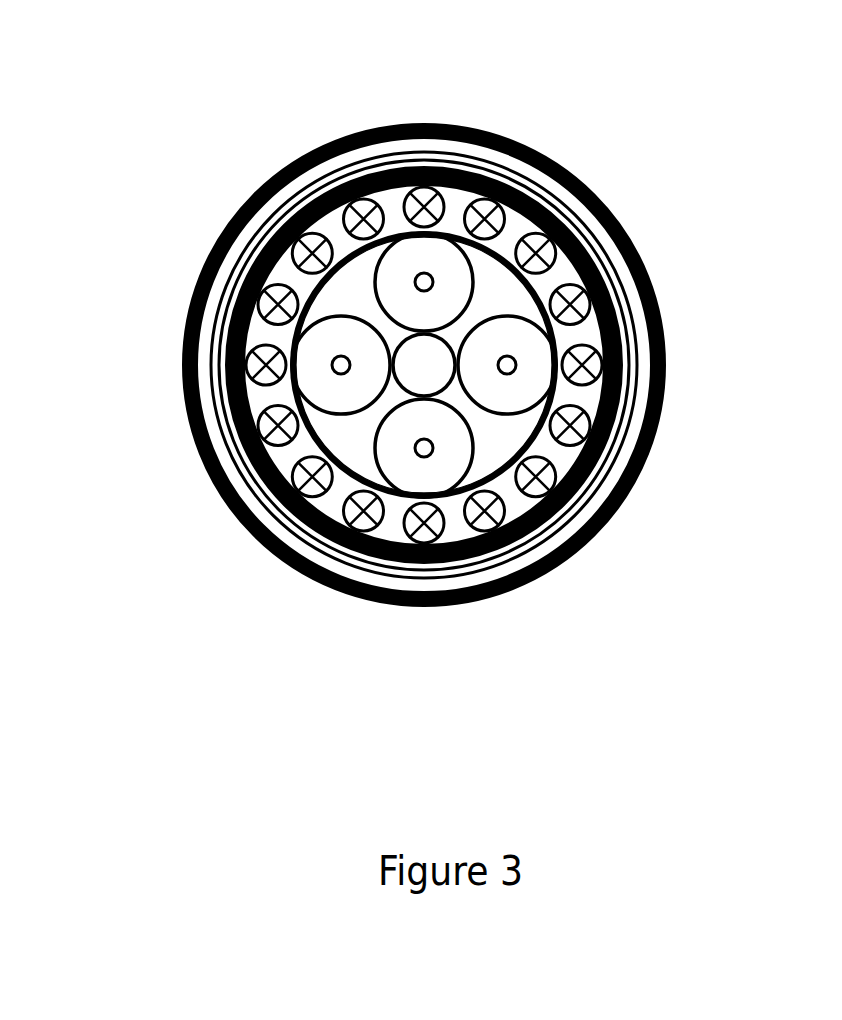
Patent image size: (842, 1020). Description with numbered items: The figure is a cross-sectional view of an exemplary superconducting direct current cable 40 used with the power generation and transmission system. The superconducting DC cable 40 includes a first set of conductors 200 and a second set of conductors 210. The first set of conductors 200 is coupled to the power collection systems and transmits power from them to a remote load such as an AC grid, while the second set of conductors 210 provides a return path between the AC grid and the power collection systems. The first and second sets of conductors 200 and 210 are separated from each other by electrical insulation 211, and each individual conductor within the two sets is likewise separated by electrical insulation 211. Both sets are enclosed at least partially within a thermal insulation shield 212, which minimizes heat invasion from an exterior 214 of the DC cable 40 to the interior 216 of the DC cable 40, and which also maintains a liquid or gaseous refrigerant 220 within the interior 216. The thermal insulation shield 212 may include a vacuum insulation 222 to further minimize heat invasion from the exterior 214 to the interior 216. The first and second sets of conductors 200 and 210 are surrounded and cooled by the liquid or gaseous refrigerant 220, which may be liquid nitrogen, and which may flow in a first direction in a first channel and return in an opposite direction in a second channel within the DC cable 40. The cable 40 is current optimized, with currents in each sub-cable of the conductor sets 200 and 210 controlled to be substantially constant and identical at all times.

The superconducting direct current cable 40 is at (676, 112).
The exterior 214 is at (527, 118).
The vacuum insulation 222 is at (245, 467).
The thermal insulation shield 212 is at (320, 538).
The second set of conductors 210 is at (600, 242).
The electrical insulation 211 is at (372, 178).
The interior 216 is at (501, 470).
The liquid or gaseous refrigerant 220 is at (513, 438).
The first set of conductors 200 is at (535, 348).